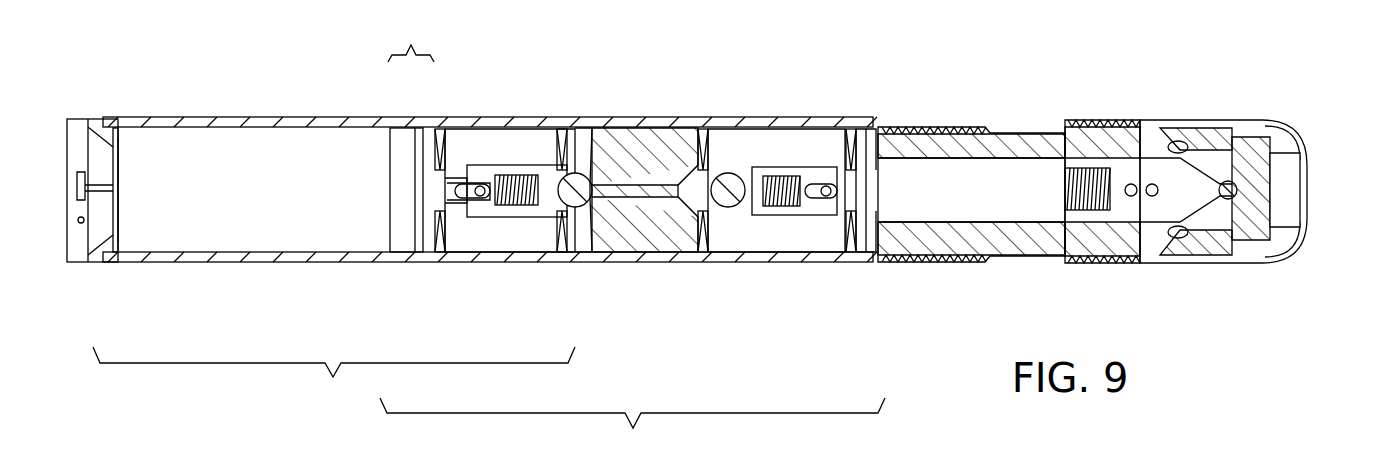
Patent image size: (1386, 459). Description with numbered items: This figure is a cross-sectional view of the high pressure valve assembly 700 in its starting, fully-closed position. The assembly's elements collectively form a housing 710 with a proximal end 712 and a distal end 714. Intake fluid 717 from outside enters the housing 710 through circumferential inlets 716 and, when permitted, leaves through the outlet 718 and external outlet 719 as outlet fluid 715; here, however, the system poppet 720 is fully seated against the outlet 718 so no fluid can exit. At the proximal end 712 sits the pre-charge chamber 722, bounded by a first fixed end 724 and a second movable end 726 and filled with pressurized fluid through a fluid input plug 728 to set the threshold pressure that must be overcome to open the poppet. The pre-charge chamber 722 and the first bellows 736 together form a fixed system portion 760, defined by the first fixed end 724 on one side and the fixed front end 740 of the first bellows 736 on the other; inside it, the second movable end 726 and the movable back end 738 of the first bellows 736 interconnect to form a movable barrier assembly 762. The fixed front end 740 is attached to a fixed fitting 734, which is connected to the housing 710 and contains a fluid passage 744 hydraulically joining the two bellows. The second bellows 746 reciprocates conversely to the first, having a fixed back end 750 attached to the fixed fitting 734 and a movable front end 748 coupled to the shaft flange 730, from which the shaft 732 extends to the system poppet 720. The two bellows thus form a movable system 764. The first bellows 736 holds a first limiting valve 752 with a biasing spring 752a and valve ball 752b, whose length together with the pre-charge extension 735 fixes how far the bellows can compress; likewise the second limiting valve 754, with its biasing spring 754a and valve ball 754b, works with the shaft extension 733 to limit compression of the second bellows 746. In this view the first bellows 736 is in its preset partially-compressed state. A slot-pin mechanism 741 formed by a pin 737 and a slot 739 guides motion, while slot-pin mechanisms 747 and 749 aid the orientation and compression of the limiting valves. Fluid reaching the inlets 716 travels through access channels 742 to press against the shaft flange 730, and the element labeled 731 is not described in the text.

The high pressure valve assembly 700 is at (183, 117).
The housing 710 is at (248, 127).
The proximal end 712 is at (110, 262).
The distal end 714 is at (1290, 135).
The outlet fluid 715 is at (1365, 190).
The inlets 716 is at (1180, 141).
The intake fluid 717 is at (1157, 120).
The outlet 718 is at (1262, 160).
The external outlet 719 is at (1292, 205).
The system poppet 720 is at (1228, 181).
The pre-charge chamber 722 is at (250, 220).
The first fixed end 724 is at (118, 225).
The second movable end 726 is at (400, 225).
The fluid input plug 728 is at (80, 172).
The shaft flange 730 is at (880, 127).
The shoulder 731 is at (1032, 132).
The shaft 732 is at (1000, 192).
The shaft extension 733 is at (860, 128).
The fixed fitting 734 is at (632, 232).
The pre-charge extension 735 is at (455, 185).
The first bellows 736 is at (490, 230).
The pin 737 is at (1152, 198).
The movable back end 738 is at (440, 230).
The slot 739 is at (1133, 198).
The fixed front end 740 is at (562, 240).
The slot-pin mechanism 741 is at (1140, 170).
The access channels 742 is at (912, 245).
The fluid passage 744 is at (643, 197).
The second bellows 746 is at (760, 235).
The slot-pin mechanism 747 is at (462, 182).
The movable front end 748 is at (848, 230).
The slot-pin mechanism 749 is at (828, 180).
The fixed back end 750 is at (707, 237).
The first limiting valve 752 is at (533, 163).
The biasing spring 752a is at (515, 205).
The valve ball 752b is at (580, 172).
The second limiting valve 754 is at (748, 160).
The biasing spring 754a is at (793, 207).
The valve ball 754b is at (727, 180).
The fixed system portion 760 is at (334, 376).
The movable barrier assembly 762 is at (411, 36).
The movable system 764 is at (632, 428).